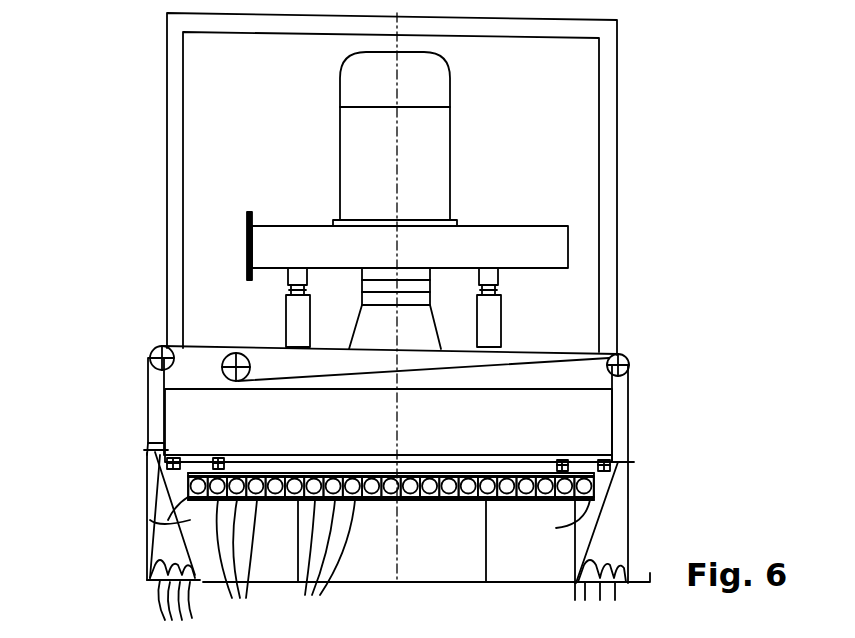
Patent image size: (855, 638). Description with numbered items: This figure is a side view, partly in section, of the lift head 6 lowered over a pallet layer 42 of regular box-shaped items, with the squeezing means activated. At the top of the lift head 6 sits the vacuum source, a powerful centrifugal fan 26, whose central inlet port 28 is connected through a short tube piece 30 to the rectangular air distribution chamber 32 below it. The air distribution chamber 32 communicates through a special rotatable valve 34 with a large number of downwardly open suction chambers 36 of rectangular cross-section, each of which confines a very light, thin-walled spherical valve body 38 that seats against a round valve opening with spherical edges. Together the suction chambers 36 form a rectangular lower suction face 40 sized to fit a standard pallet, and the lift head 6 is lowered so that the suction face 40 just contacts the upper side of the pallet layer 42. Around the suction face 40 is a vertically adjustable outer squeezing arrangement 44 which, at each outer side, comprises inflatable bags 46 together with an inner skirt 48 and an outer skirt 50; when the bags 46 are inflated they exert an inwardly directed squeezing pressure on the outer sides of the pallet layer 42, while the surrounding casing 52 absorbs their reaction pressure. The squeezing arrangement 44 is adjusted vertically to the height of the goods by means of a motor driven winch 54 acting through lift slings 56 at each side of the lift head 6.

The lift head 6 is at (620, 150).
The centrifugal fan 26 is at (562, 240).
The central inlet port 28 is at (498, 268).
The short tube piece 30 is at (430, 327).
The air distribution chamber 32 is at (590, 412).
The rotatable valve 34 is at (556, 528).
The suction chambers 36 is at (237, 567).
The spherical valve bodies 38 is at (326, 567).
The suction face 40 is at (436, 500).
The pallet layer 42 is at (515, 565).
The squeezing arrangement 44 is at (118, 552).
The inflatable bags 46 is at (175, 609).
The inner skirt 48 is at (190, 502).
The outer skirt 50 is at (150, 520).
The casing 52 is at (147, 582).
The motor driven winch 54 is at (243, 350).
The lift slings 56 is at (148, 408).